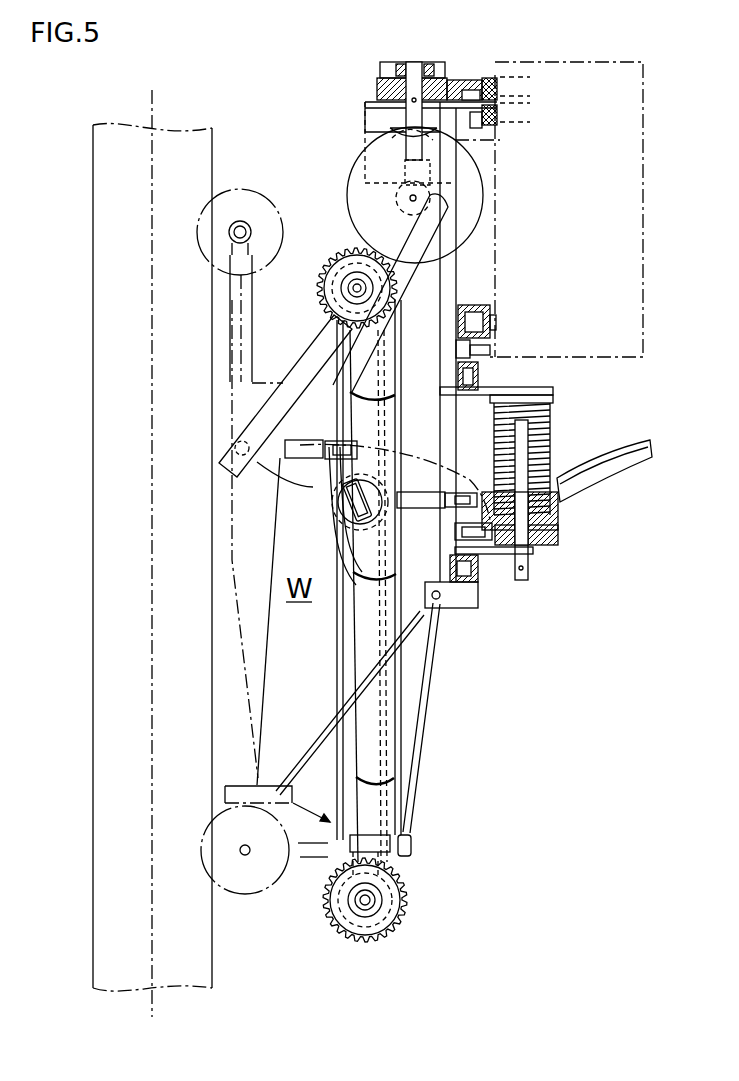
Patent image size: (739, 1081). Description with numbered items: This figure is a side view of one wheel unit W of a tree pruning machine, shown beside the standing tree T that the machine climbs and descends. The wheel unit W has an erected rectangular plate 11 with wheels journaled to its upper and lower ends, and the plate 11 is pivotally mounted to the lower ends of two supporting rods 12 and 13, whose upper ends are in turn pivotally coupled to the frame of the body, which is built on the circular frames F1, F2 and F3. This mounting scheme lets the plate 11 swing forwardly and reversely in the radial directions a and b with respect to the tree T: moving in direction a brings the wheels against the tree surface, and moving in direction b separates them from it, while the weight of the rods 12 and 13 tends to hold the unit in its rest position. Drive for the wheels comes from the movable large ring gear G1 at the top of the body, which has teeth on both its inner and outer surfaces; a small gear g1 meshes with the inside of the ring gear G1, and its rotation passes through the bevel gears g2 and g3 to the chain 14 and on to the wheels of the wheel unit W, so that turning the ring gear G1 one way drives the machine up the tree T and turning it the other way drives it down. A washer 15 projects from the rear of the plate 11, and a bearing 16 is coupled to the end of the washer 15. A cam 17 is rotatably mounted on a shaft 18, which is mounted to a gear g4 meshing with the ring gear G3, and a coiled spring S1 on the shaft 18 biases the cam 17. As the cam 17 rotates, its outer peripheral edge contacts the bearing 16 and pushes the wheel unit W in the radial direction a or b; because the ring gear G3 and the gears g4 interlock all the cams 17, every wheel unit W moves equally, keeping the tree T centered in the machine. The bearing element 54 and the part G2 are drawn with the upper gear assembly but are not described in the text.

The standing tree T is at (95, 212).
The wheel unit W is at (340, 262).
The supporting rod 12 is at (380, 347).
The washer 15 is at (298, 458).
The bearing 16 is at (337, 443).
The erected rectangular plate 11 is at (312, 622).
The chain 14 is at (405, 393).
The supporting rod 13 is at (368, 692).
The small gear g1 is at (380, 85).
The movable large ring gear G1 is at (462, 82).
The bearing 54 is at (492, 78).
The lower bearing G2 is at (492, 125).
The bevel gear g2 is at (395, 128).
The bevel gear g3 is at (352, 178).
The circular frame F1 is at (480, 305).
The circular frame F2 is at (480, 387).
The shaft 18 is at (545, 412).
The coiled spring S1 is at (545, 440).
The gear g4 is at (556, 527).
The ring gear G3 is at (492, 547).
The circular frame F3 is at (478, 600).
The cam 17 is at (622, 443).
The radial direction a is at (311, 823).
The radial direction b is at (314, 866).